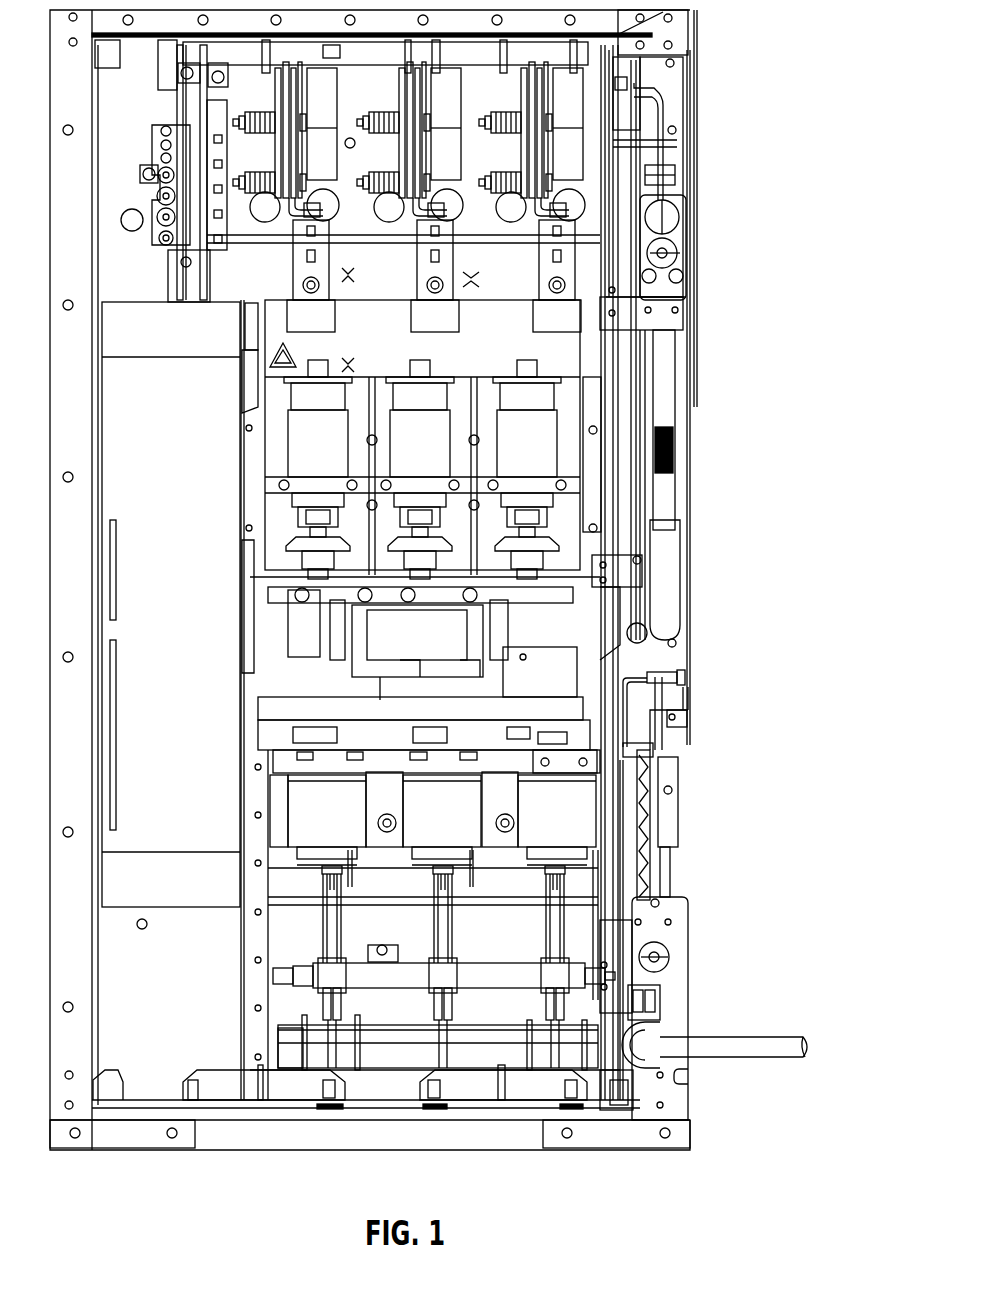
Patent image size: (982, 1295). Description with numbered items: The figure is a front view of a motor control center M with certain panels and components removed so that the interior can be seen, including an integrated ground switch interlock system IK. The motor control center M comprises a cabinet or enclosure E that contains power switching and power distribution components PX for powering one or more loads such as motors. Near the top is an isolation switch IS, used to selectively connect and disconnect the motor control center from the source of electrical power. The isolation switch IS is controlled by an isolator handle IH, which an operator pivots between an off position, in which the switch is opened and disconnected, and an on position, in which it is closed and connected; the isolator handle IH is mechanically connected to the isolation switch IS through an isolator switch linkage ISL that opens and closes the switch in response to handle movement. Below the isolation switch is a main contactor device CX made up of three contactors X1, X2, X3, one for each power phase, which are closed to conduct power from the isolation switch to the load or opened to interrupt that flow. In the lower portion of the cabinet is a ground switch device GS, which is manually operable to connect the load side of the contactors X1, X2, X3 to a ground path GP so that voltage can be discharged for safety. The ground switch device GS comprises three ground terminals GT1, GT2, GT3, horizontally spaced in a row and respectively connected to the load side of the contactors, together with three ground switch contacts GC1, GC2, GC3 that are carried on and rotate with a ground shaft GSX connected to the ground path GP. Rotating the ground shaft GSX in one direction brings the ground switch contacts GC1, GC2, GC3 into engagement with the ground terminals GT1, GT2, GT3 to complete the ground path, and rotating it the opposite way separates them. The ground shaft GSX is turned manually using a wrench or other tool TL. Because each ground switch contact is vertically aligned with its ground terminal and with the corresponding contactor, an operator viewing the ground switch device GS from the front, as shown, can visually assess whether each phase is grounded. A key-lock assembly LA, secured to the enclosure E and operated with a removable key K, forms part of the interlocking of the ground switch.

The motor control center M is at (370, 580).
The enclosure E is at (690, 112).
The isolation switch IS is at (250, 262).
The isolator switch linkage ISL is at (667, 140).
The power switching and power distribution components PX is at (240, 425).
The main contactor device CX is at (258, 507).
The contactor X1 is at (331, 468).
The contactor X2 is at (431, 468).
The contactor X3 is at (538, 468).
The isolator handle IH is at (667, 590).
The integrated ground switch interlock system IK is at (676, 854).
The key-lock assembly LA is at (667, 948).
The key K is at (668, 955).
The tool TL is at (790, 1037).
The ground terminal GT1 is at (323, 878).
The ground terminal GT2 is at (437, 880).
The ground terminal GT3 is at (552, 880).
The ground switch contact GC1 is at (343, 947).
The ground switch contact GC2 is at (453, 912).
The ground switch contact GC3 is at (547, 943).
The ground switch device GS is at (300, 995).
The ground path GP is at (392, 1043).
The ground shaft GSX is at (492, 1043).